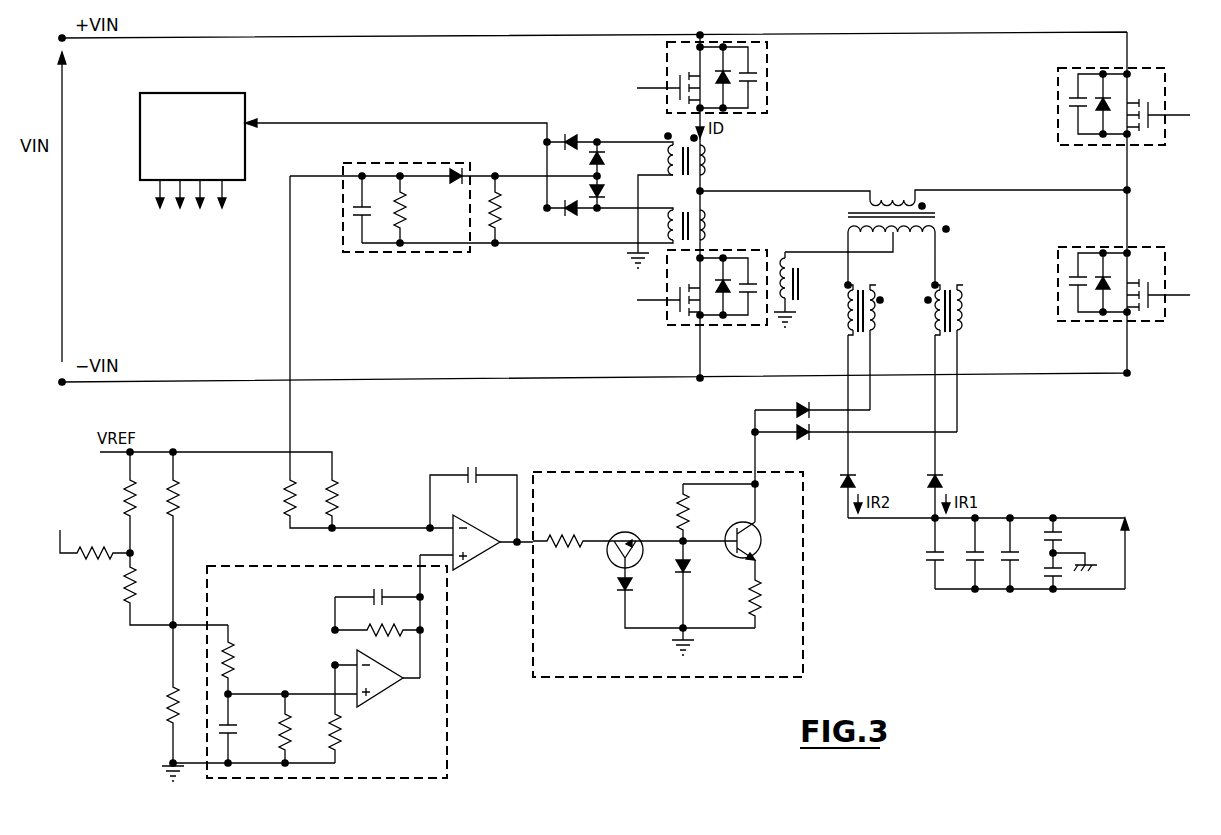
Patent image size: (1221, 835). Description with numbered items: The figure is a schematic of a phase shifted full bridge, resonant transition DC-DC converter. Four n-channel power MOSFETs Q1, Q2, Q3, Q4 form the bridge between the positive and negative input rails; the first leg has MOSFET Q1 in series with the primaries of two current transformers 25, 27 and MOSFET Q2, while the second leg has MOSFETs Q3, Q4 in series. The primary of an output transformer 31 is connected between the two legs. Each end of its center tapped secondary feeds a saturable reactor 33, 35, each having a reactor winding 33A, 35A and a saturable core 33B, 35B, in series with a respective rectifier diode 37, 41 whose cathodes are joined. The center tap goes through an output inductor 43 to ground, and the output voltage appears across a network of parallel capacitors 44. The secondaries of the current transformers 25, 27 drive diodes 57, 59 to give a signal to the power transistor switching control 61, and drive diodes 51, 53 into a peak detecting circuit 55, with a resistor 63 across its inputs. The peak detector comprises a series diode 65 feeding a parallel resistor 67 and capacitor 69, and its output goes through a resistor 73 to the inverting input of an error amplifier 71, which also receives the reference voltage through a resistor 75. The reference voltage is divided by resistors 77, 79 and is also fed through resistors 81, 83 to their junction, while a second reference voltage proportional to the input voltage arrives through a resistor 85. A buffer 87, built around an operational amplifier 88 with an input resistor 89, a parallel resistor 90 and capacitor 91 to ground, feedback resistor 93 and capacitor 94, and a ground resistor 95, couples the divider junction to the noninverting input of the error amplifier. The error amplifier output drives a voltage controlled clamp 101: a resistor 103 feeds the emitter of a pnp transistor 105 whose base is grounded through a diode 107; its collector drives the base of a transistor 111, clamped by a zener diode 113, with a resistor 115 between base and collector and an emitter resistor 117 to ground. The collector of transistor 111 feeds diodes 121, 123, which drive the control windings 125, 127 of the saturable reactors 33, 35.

The current transformer 25 is at (708, 160).
The current transformer 27 is at (705, 225).
The transformer 31 is at (936, 210).
The saturable reactor 33 is at (864, 335).
The reactor winding 33A is at (847, 335).
The saturable core 33B is at (873, 288).
The saturable reactor 35 is at (949, 346).
The reactor winding 35A is at (934, 335).
The saturable core 35B is at (960, 288).
The diode 37 is at (856, 482).
The diode 41 is at (942, 480).
The output inductor 43 is at (787, 262).
The network of parallel capacitors 44 is at (868, 573).
The diode 51 is at (602, 150).
The diode 53 is at (602, 195).
The peak detecting circuit 55 is at (443, 194).
The diode 57 is at (568, 140).
The diode 59 is at (568, 212).
The power transistor switching control 61 is at (250, 106).
The resistor 63 is at (498, 210).
The diode 65 is at (452, 170).
The resistor 67 is at (403, 226).
The capacitor 69 is at (358, 208).
The error amplifier 71 is at (460, 465).
The resistor 73 is at (286, 500).
The resistor 75 is at (337, 498).
The resistor 77 is at (178, 498).
The resistor 79 is at (168, 700).
The resistor 81 is at (126, 500).
The resistor 83 is at (126, 600).
The resistor 85 is at (108, 560).
The buffer 87 is at (355, 666).
The operational amplifier 88 is at (385, 695).
The resistor 89 is at (233, 660).
The resistor 90 is at (290, 745).
The capacitor 91 is at (232, 728).
The resistor 93 is at (372, 638).
The capacitor 94 is at (372, 592).
The resistor 95 is at (340, 740).
The voltage controlled clamp 101 is at (668, 559).
The resistor 103 is at (555, 548).
The pnp transistor 105 is at (612, 540).
The diode 107 is at (618, 594).
The transistor 111 is at (760, 546).
The zener diode 113 is at (690, 572).
The resistor 115 is at (678, 516).
The resistor 117 is at (760, 606).
The diode 121 is at (796, 404).
The diode 123 is at (802, 440).
The control winding 125 is at (880, 312).
The control winding 127 is at (968, 312).
The power MOSFET Q1 is at (767, 78).
The power MOSFET Q2 is at (720, 248).
The power MOSFET Q3 is at (1140, 68).
The power MOSFET Q4 is at (1098, 236).